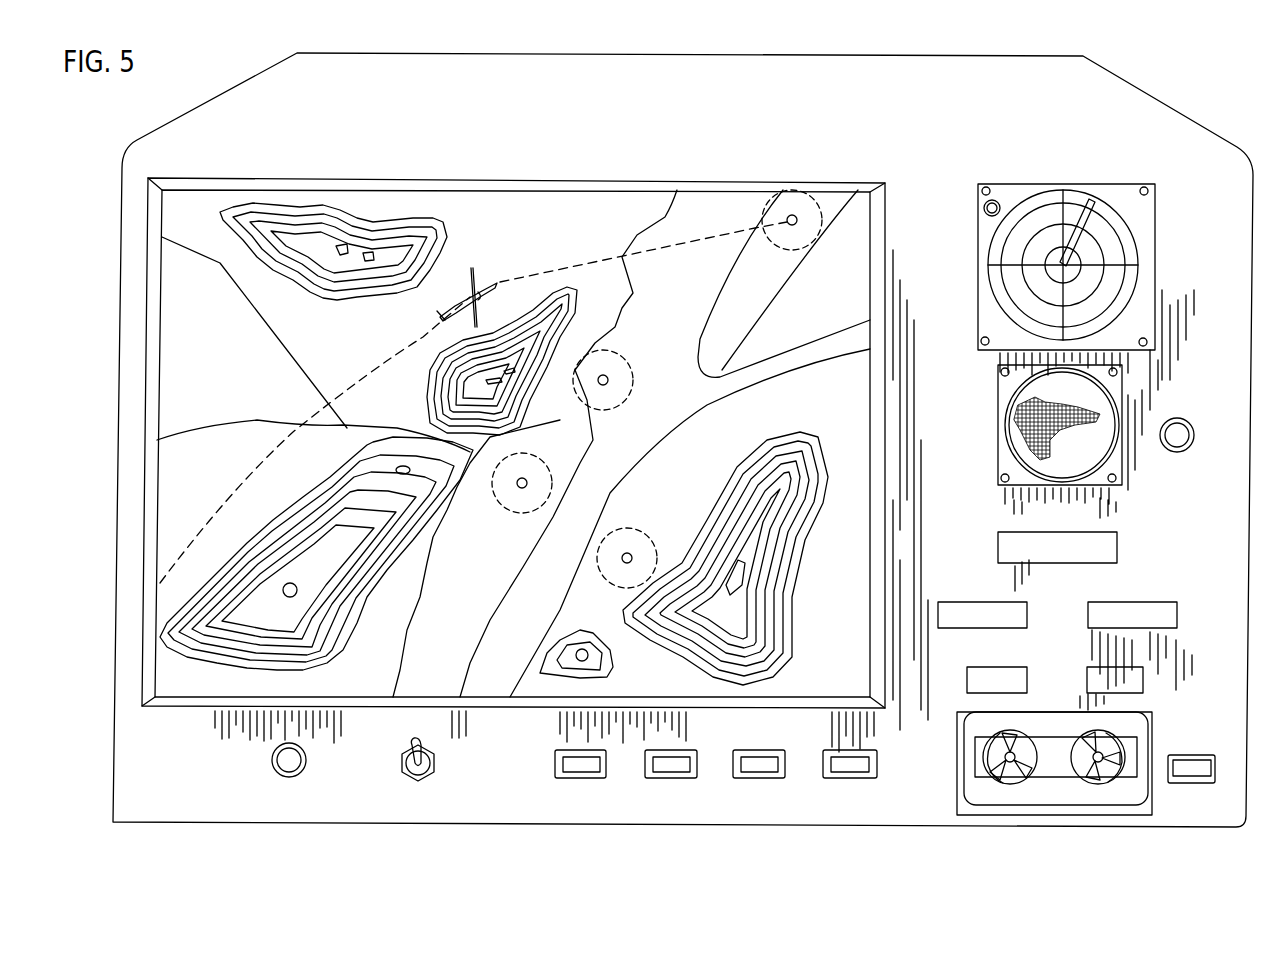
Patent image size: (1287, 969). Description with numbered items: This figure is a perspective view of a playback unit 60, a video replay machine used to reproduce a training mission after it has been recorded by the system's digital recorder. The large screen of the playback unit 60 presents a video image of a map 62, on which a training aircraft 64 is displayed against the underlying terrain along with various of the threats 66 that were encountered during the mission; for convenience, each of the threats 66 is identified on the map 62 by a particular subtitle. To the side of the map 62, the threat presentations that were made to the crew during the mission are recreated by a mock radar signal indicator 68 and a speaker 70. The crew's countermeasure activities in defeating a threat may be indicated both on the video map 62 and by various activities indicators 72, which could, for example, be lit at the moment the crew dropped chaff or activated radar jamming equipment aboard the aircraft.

The playback unit 60 is at (118, 482).
The map 62 is at (540, 205).
The training aircraft 64 is at (478, 290).
The threats 66 is at (773, 248).
The mock radar signal indicator 68 is at (1156, 292).
The speaker 70 is at (998, 398).
The activities indicators 72 is at (1087, 681).